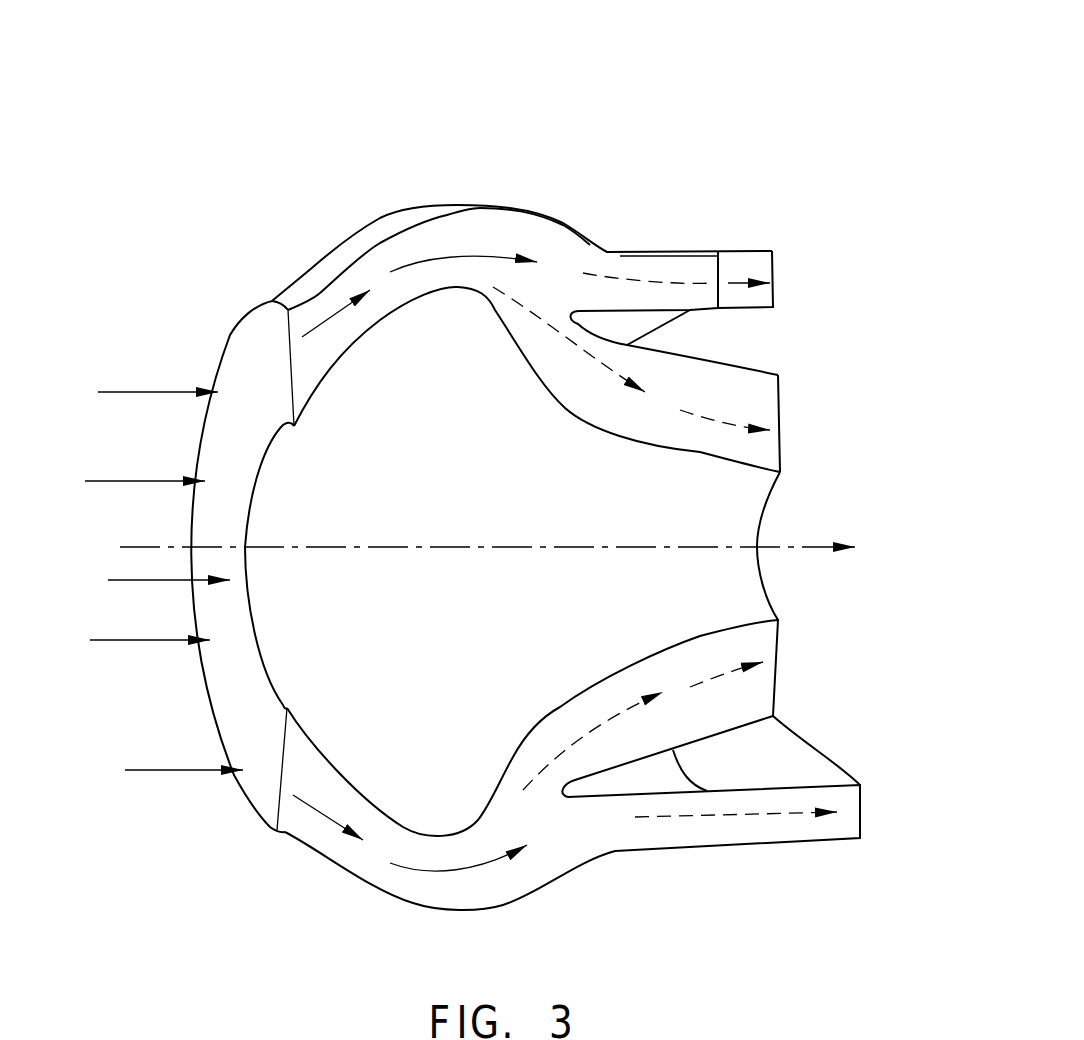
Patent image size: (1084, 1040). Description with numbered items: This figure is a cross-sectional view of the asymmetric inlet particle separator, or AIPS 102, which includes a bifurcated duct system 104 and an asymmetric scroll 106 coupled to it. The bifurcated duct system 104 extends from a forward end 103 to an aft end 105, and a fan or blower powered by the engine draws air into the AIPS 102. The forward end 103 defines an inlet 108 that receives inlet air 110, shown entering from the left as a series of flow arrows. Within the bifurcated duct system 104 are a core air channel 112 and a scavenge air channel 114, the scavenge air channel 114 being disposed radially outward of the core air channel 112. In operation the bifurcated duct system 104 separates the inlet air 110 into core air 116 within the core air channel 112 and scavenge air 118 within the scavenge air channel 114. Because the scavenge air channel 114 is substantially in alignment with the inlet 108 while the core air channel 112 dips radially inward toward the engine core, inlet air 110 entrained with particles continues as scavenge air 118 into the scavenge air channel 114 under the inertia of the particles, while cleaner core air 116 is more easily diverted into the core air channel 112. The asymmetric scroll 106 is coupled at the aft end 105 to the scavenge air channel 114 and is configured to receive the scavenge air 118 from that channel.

The asymmetric inlet particle separator (AIPS) 102 is at (632, 125).
The forward end 103 is at (223, 513).
The bifurcated duct system 104 is at (390, 233).
The aft end 105 is at (713, 268).
The asymmetric scroll 106 is at (743, 262).
The inlet 108 is at (252, 353).
The inlet air 110 is at (172, 481).
The core air channel 112 is at (728, 390).
The scavenge air channel 114 is at (605, 252).
The core air 116 is at (730, 427).
The scavenge air 118 is at (717, 283).